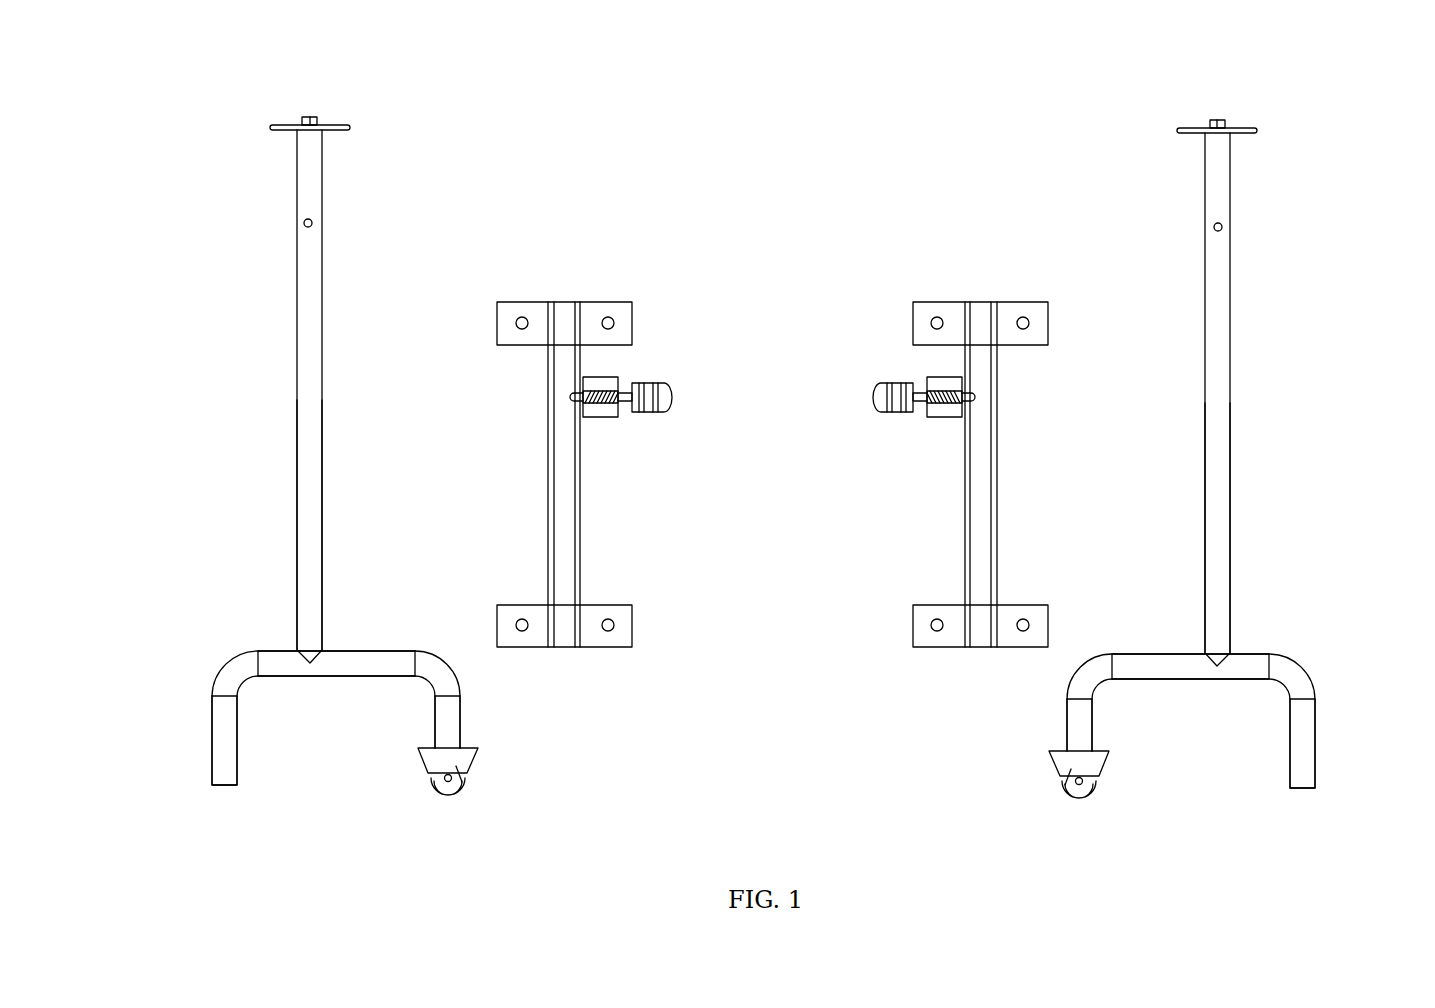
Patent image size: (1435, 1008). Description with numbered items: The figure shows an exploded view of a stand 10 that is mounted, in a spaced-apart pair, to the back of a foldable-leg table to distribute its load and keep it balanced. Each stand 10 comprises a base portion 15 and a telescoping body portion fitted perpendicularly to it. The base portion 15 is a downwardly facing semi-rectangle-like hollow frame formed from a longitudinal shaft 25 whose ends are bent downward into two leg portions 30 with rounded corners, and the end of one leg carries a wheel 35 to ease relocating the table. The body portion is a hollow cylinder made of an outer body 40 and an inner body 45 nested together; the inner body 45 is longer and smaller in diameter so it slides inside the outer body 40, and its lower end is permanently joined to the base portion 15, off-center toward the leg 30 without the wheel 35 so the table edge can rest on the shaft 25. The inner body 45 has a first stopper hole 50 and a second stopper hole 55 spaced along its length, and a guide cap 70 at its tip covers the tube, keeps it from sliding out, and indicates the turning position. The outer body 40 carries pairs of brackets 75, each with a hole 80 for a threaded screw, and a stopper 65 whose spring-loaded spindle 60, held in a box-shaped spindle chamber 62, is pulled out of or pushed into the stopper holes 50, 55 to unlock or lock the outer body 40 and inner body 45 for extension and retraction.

The stand 10 is at (478, 138).
The base portion 15 is at (352, 638).
The shaft 25 is at (763, 697).
The leg portion 30 is at (769, 740).
The wheel 35 is at (763, 803).
The outer body 40 is at (811, 474).
The inner body 45 is at (816, 508).
The first stopper hole 50 is at (763, 398).
The second stopper hole 55 is at (814, 199).
The spindle 60 is at (772, 431).
The spindle chamber 62 is at (772, 408).
The stopper 65 is at (772, 416).
The guide cap 70 is at (802, 85).
The brackets 75 is at (772, 457).
The hole 80 is at (801, 467).